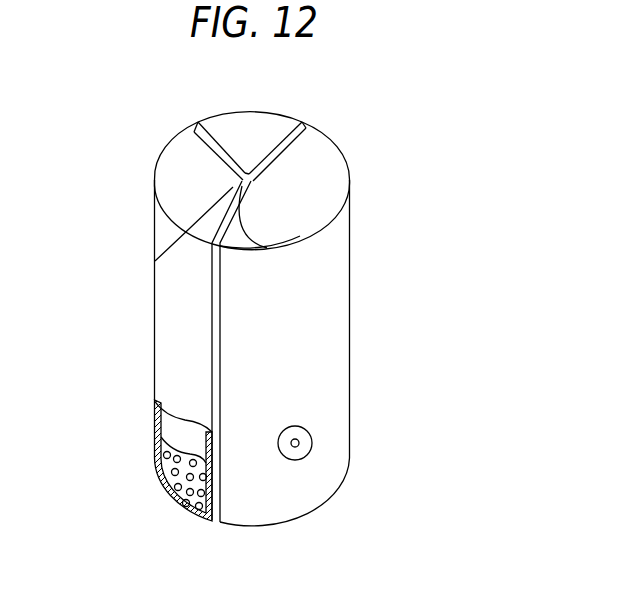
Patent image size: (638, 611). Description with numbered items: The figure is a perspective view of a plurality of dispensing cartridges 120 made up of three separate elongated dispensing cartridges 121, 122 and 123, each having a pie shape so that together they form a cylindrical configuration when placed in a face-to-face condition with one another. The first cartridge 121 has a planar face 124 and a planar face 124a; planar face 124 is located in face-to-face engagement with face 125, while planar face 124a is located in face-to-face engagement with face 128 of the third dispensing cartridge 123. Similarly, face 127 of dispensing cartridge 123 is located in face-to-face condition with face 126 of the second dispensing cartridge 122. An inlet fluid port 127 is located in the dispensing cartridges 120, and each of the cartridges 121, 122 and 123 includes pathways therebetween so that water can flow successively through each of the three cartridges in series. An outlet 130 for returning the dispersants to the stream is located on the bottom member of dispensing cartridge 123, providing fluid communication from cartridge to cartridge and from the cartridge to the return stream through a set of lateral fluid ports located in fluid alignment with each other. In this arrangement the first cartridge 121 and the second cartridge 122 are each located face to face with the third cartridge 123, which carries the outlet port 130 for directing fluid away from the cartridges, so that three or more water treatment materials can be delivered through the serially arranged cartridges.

The plurality of dispensing cartridges 120 is at (341, 109).
The first dispensing cartridge 121 is at (337, 176).
The second dispensing cartridge 122 is at (231, 122).
The third dispensing cartridge 123 is at (172, 178).
The planar face 124 is at (283, 146).
The planar face 124a is at (280, 249).
The face 125 is at (273, 151).
The face 126 is at (197, 136).
The inlet fluid port 127 is at (235, 211).
The face 128 is at (212, 296).
The outlet 130 is at (167, 477).